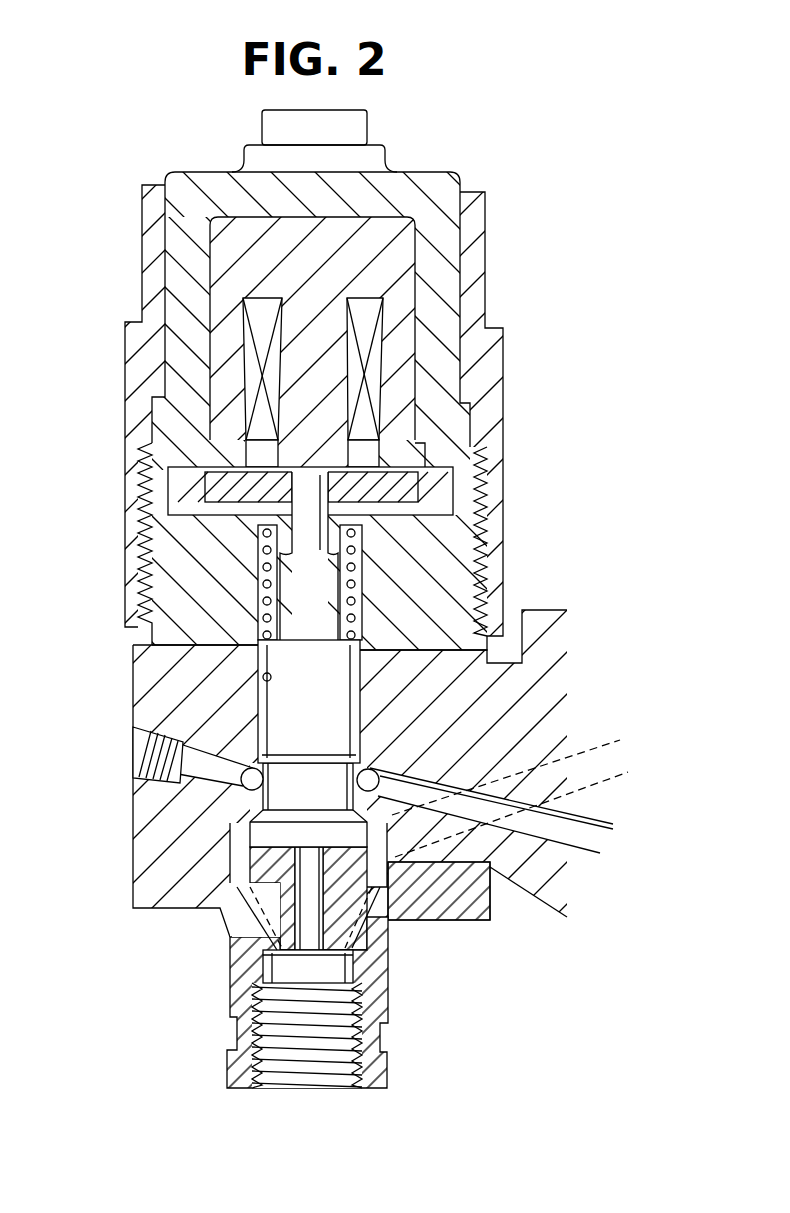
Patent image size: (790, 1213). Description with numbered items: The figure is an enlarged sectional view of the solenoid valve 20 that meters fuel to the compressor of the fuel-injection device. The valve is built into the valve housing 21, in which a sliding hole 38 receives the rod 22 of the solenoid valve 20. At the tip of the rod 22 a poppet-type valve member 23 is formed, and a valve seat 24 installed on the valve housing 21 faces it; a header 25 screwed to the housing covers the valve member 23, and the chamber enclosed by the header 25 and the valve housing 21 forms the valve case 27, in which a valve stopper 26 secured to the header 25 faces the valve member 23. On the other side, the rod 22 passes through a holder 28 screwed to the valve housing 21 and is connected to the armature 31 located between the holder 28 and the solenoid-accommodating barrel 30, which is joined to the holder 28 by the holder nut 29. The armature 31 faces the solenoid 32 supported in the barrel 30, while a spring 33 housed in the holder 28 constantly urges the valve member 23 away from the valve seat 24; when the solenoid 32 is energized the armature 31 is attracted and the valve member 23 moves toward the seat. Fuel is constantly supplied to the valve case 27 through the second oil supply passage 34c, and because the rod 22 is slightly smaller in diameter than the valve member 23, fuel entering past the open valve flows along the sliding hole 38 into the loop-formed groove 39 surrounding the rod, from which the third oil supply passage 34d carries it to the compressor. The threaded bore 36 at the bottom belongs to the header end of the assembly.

The solenoid valve 20 is at (507, 208).
The valve housing 21 is at (143, 840).
The rod 22 is at (273, 712).
The valve member 23 is at (380, 910).
The valve seat 24 is at (253, 810).
The header 25 is at (383, 1070).
The valve stopper 26 is at (352, 895).
The valve case 27 is at (238, 867).
The holder 28 is at (158, 570).
The holder nut 29 is at (128, 490).
The solenoid-accommodating barrel 30 is at (180, 362).
The armature 31 is at (403, 490).
The solenoid 32 is at (363, 313).
The spring 33 is at (357, 570).
The second oil supply passage 34c is at (580, 770).
The third oil supply passage 34d is at (590, 850).
The threaded bore 36 is at (328, 1063).
The sliding hole 38 is at (260, 677).
The loop-formed groove 39 is at (377, 763).